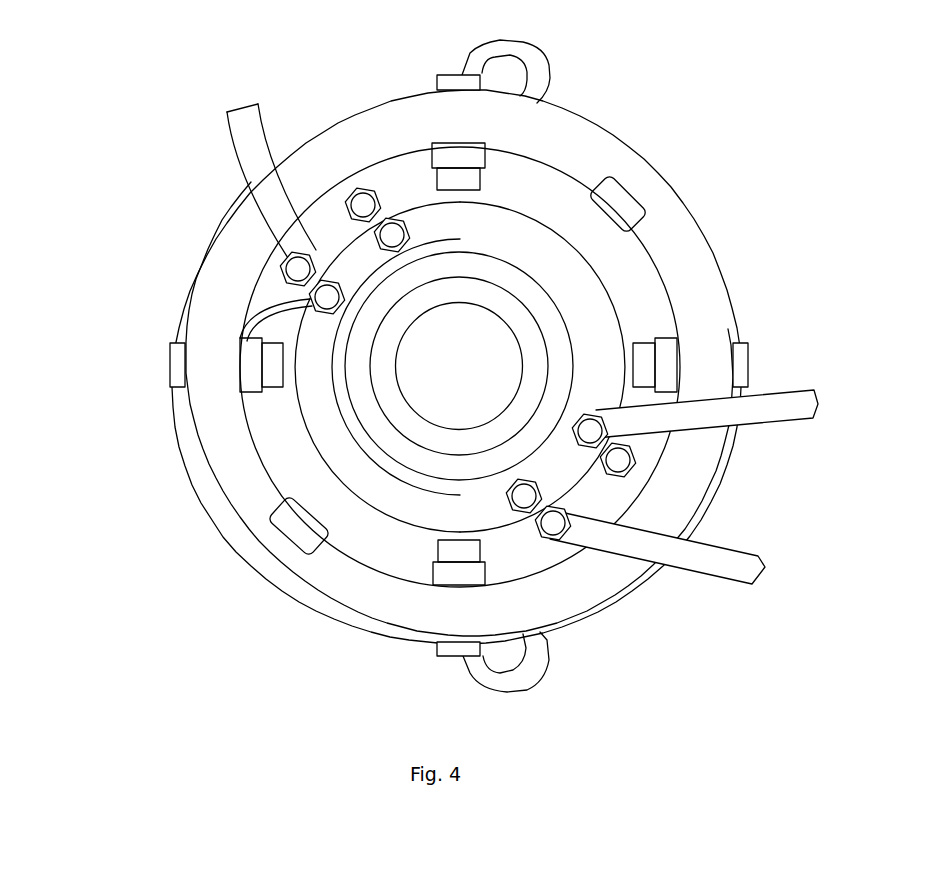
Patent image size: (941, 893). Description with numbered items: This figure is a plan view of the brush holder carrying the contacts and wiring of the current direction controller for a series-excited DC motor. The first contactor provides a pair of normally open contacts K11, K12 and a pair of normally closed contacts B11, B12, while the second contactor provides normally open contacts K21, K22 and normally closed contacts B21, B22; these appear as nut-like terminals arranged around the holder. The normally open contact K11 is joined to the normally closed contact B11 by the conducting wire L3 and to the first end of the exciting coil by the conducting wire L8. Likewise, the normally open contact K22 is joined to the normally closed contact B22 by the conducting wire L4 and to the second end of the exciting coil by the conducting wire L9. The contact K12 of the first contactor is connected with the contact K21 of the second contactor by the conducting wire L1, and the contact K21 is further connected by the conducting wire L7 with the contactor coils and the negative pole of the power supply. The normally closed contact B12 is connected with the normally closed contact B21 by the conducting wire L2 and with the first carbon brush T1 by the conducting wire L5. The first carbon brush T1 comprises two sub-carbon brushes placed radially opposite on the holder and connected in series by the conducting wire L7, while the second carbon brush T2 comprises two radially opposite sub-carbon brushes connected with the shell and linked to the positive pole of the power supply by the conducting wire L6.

The conducting wire L1 is at (587, 296).
The conducting wire L2 is at (343, 450).
The conducting wire L3 is at (330, 230).
The conducting wire L4 is at (593, 493).
The conducting wire L5 is at (270, 308).
The conducting wire L6 is at (540, 72).
The conducting wire L7 is at (793, 400).
The conducting wire L8 is at (242, 122).
The conducting wire L9 is at (760, 573).
The first carbon brush T1 is at (176, 368).
The second carbon brush T2 is at (456, 84).
The normally open contact K11 is at (296, 268).
The normally open contact K12 is at (391, 233).
The normally open contact K21 is at (591, 432).
The normally open contact K22 is at (555, 526).
The normally closed contact B11 is at (362, 205).
The normally closed contact B12 is at (326, 297).
The normally closed contact B21 is at (524, 500).
The normally closed contact B22 is at (619, 461).